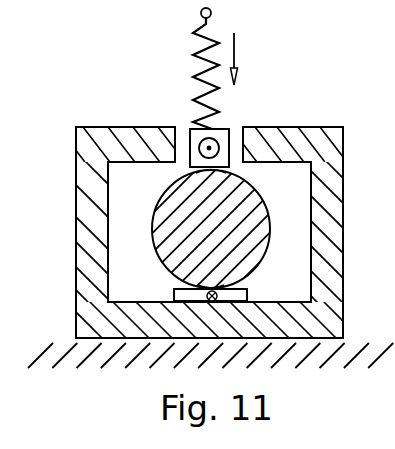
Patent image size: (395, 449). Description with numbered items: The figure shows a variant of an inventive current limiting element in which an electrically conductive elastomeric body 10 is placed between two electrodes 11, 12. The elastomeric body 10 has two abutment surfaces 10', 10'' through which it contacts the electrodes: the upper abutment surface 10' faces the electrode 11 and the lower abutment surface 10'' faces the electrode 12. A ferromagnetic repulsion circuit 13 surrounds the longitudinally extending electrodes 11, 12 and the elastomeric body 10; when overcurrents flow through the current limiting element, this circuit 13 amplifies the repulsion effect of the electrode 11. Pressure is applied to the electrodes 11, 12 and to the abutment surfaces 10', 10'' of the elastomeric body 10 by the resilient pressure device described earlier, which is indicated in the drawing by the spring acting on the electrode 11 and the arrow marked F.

The electrically conductive elastomeric body 10 is at (205, 230).
The abutment surface of the elastomeric body 10' is at (247, 182).
The abutment surface of the elastomeric body 10'' is at (250, 279).
The electrode 11 is at (228, 128).
The electrode 12 is at (175, 296).
The ferromagnetic repulsion circuit 13 is at (82, 188).
The applied force F is at (243, 59).